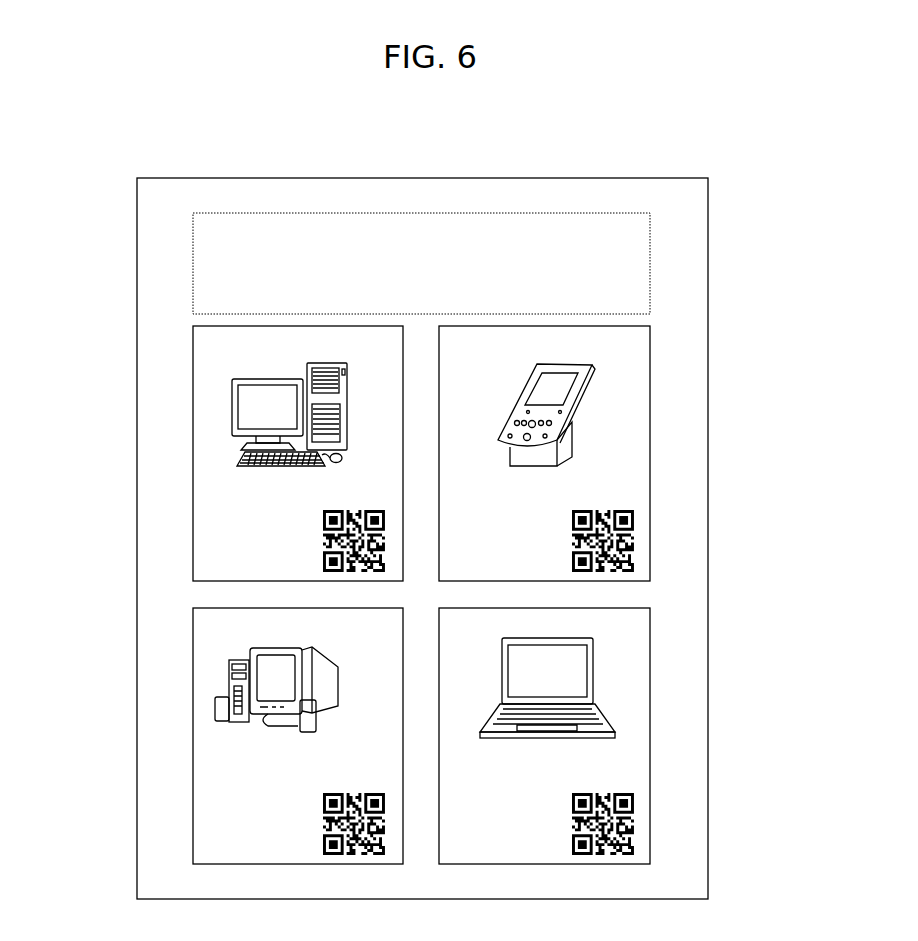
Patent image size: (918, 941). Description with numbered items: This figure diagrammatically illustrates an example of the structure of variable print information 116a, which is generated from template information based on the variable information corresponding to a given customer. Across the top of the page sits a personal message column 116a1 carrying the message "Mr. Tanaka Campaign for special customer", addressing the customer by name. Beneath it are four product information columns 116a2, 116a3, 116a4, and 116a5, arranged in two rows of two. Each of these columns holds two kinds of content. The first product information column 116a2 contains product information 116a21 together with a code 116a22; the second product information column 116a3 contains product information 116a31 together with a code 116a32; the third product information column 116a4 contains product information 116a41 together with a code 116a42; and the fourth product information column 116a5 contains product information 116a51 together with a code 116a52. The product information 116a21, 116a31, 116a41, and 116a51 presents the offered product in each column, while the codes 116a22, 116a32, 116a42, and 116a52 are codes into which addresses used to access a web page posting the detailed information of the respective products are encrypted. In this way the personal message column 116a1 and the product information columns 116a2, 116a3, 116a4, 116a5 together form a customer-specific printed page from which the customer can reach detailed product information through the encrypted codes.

The variable print information 116a is at (697, 157).
The personal message column 116a1 is at (650, 248).
The product information column 116a2 is at (225, 453).
The product information 116a21 is at (232, 398).
The code 116a22 is at (323, 538).
The product information column 116a3 is at (622, 453).
The product information 116a31 is at (590, 372).
The code 116a32 is at (632, 530).
The product information column 116a4 is at (225, 736).
The product information 116a41 is at (232, 682).
The code 116a42 is at (323, 823).
The product information column 116a5 is at (622, 736).
The product information 116a51 is at (593, 657).
The code 116a52 is at (632, 818).